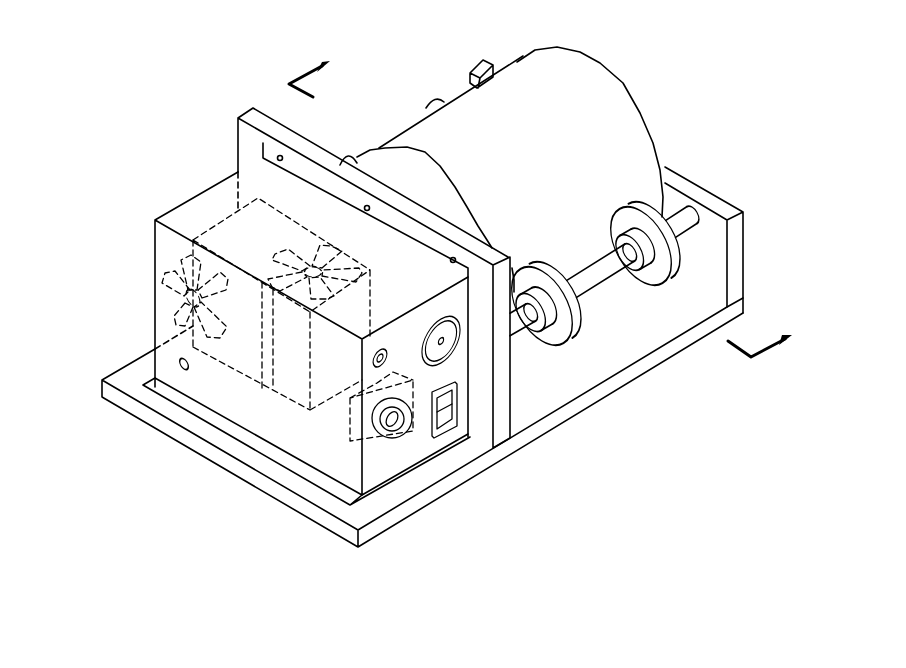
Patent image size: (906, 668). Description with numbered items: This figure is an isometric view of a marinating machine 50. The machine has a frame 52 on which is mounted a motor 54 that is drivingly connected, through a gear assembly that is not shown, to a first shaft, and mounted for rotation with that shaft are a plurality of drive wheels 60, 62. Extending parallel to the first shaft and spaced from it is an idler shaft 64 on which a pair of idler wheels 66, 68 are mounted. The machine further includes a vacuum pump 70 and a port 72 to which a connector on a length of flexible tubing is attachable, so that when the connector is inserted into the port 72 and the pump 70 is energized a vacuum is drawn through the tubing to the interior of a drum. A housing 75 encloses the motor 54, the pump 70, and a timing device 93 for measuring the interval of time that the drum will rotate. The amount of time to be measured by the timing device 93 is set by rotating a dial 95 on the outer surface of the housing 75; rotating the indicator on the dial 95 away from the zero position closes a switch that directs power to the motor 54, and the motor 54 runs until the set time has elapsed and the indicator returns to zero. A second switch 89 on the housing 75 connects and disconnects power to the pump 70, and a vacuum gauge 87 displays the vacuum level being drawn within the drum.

The marinating machine 50 is at (124, 198).
The frame 52 is at (241, 474).
The motor 54 is at (221, 233).
The drive wheel 60 is at (349, 156).
The drive wheel 62 is at (430, 105).
The idler shaft 64 is at (595, 281).
The idler wheel 66 is at (566, 326).
The idler wheel 68 is at (655, 265).
The vacuum pump 70 is at (292, 403).
The port 72 is at (381, 350).
The housing 75 is at (155, 314).
The vacuum gauge 87 is at (444, 341).
The second switch 89 is at (447, 420).
The timing device 93 is at (350, 421).
The dial 95 is at (399, 426).